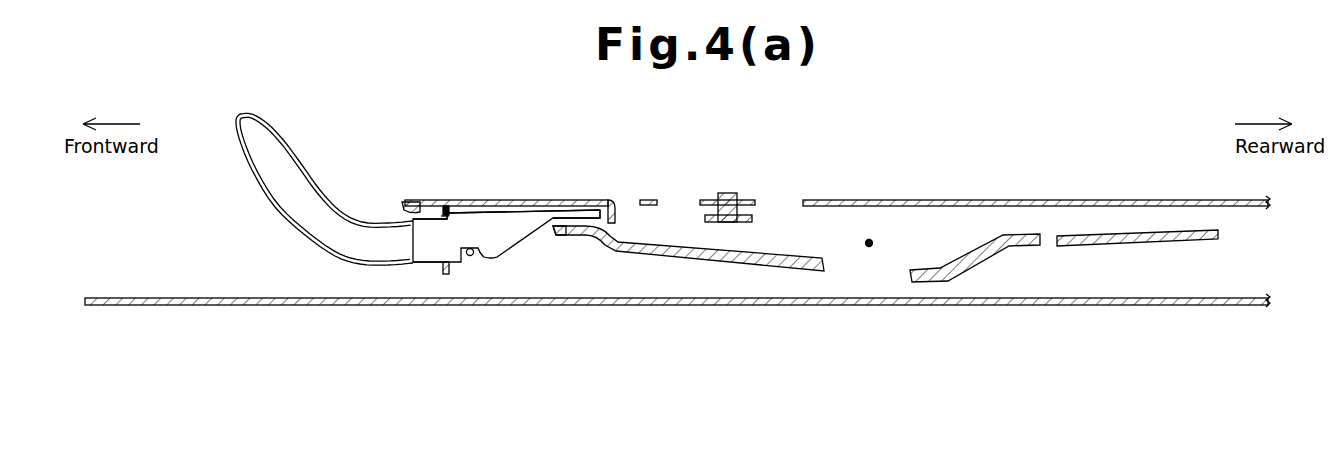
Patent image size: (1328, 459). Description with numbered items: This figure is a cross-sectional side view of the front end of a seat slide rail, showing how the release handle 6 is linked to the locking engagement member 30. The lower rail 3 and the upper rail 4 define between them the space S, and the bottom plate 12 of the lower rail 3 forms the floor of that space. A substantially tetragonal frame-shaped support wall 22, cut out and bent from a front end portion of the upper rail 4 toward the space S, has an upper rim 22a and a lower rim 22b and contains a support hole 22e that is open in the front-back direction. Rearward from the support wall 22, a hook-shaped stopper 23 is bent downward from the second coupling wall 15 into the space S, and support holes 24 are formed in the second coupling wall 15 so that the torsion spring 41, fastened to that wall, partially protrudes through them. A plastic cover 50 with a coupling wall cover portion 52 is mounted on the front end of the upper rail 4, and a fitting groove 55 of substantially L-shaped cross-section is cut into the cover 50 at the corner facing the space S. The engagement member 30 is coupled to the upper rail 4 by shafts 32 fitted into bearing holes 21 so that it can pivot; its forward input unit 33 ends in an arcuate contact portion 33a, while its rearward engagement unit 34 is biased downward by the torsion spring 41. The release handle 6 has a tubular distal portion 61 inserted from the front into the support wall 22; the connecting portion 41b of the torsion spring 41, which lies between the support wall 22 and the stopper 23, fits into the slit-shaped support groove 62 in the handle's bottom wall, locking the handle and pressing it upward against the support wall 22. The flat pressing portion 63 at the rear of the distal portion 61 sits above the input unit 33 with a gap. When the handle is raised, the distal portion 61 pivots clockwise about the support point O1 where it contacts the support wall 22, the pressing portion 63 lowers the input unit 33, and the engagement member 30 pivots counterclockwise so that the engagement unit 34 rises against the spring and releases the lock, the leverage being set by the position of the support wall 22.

The release handle 6 is at (296, 158).
The coupling wall cover portion 52 is at (407, 203).
The cover 50 is at (380, 155).
The fitting groove 55 is at (440, 206).
The support wall 22 is at (445, 212).
The upper rim 22a is at (445, 216).
The support hole 22e is at (410, 226).
The support point O1 is at (443, 220).
The pressing portion 63 is at (578, 215).
The stopper 23 is at (611, 215).
The support hole 24 is at (760, 199).
The support groove 62 is at (485, 258).
The distal portion 61 is at (425, 264).
The lower rim 22b is at (446, 275).
The connecting portion 41b is at (468, 258).
The torsion spring 41 is at (506, 292).
The input unit 33 is at (607, 241).
The contact portion 33a is at (563, 236).
The engagement member 30 is at (995, 233).
The engagement unit 34 is at (1120, 233).
The shaft 32 is at (869, 246).
The bearing hole 21 is at (887, 294).
The second coupling wall 15 is at (1230, 201).
The upper rail 4 is at (1064, 188).
The floor panel 12 is at (1160, 306).
The lower rail 3 is at (677, 328).
The space S is at (1239, 272).